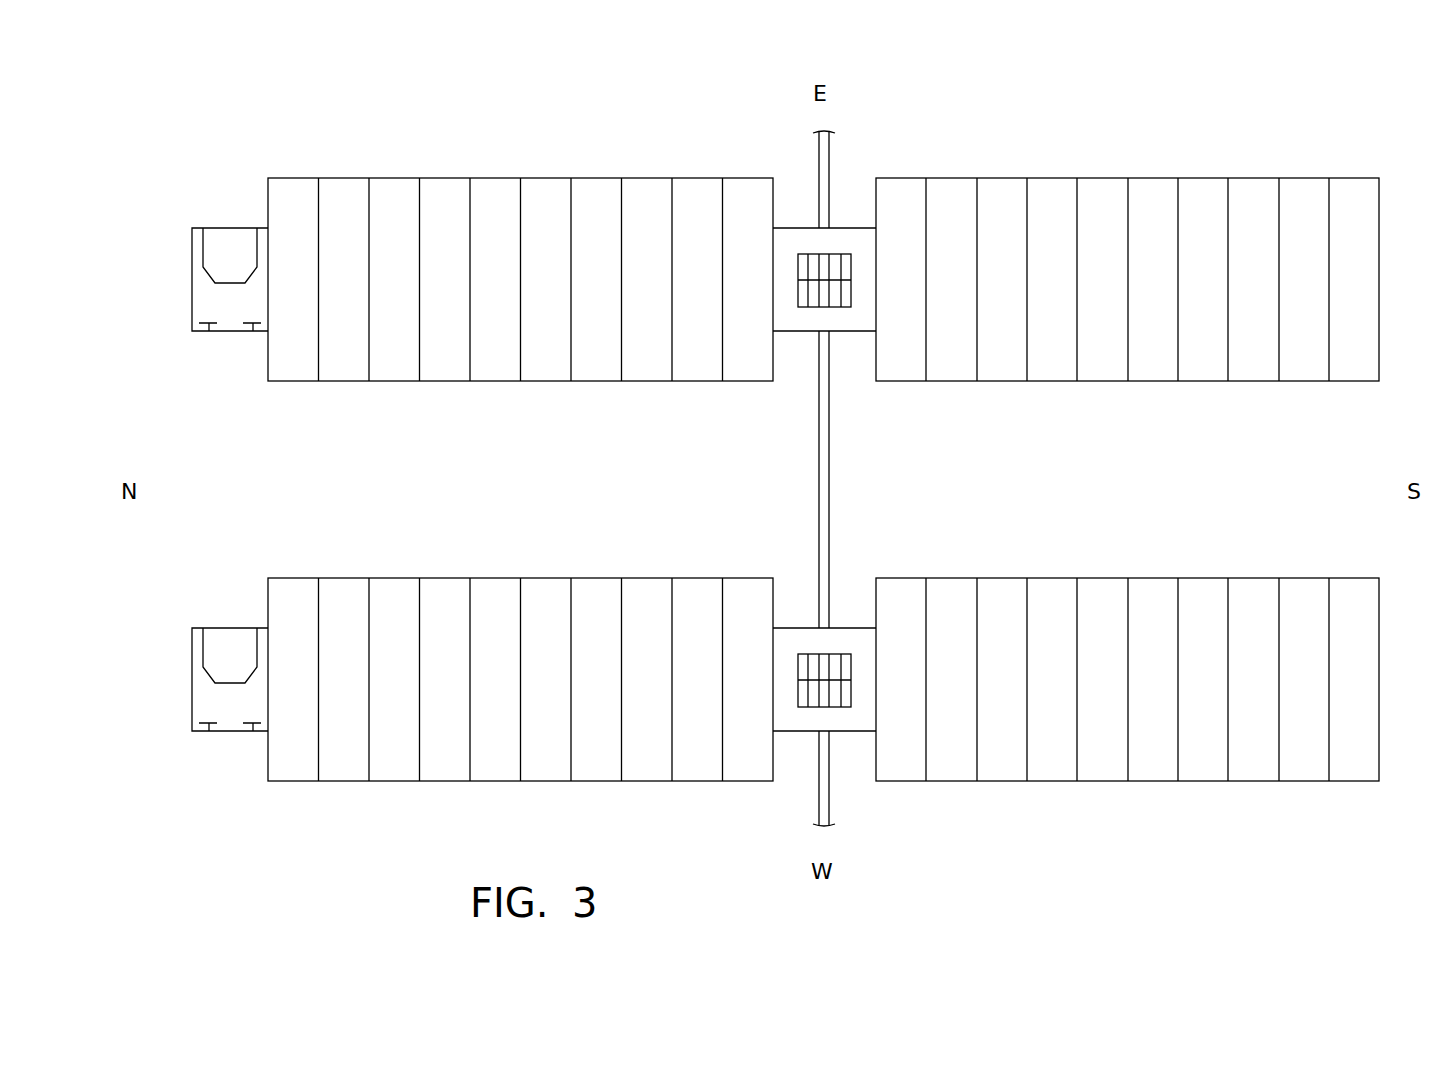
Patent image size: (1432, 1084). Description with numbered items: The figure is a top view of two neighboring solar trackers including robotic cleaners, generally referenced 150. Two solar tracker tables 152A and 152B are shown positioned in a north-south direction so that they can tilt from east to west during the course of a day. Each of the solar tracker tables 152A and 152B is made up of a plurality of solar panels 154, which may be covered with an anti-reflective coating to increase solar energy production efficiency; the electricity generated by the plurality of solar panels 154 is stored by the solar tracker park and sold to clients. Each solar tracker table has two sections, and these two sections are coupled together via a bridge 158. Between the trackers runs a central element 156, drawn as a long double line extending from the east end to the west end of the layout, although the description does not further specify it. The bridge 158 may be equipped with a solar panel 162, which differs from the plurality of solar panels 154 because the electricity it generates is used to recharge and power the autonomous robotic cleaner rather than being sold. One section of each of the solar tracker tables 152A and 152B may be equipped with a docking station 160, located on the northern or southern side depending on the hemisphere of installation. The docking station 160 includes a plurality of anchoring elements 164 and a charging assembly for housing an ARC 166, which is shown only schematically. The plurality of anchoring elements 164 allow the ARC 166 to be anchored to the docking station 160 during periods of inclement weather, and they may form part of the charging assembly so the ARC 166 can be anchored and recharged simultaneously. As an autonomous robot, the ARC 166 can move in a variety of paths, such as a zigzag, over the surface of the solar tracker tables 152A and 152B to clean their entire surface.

The two neighboring solar trackers including robotic cleaners 150 is at (246, 110).
The solar tracker table 152A is at (392, 178).
The solar tracker table 152B is at (392, 578).
The plurality of solar panels 154 is at (497, 372).
The central walkway 156 is at (825, 458).
The bridge 158 is at (848, 240).
The docking station 160 is at (212, 294).
The solar panel 162 is at (803, 300).
The plurality of anchoring elements 164 is at (252, 334).
The ARC 166 is at (233, 243).